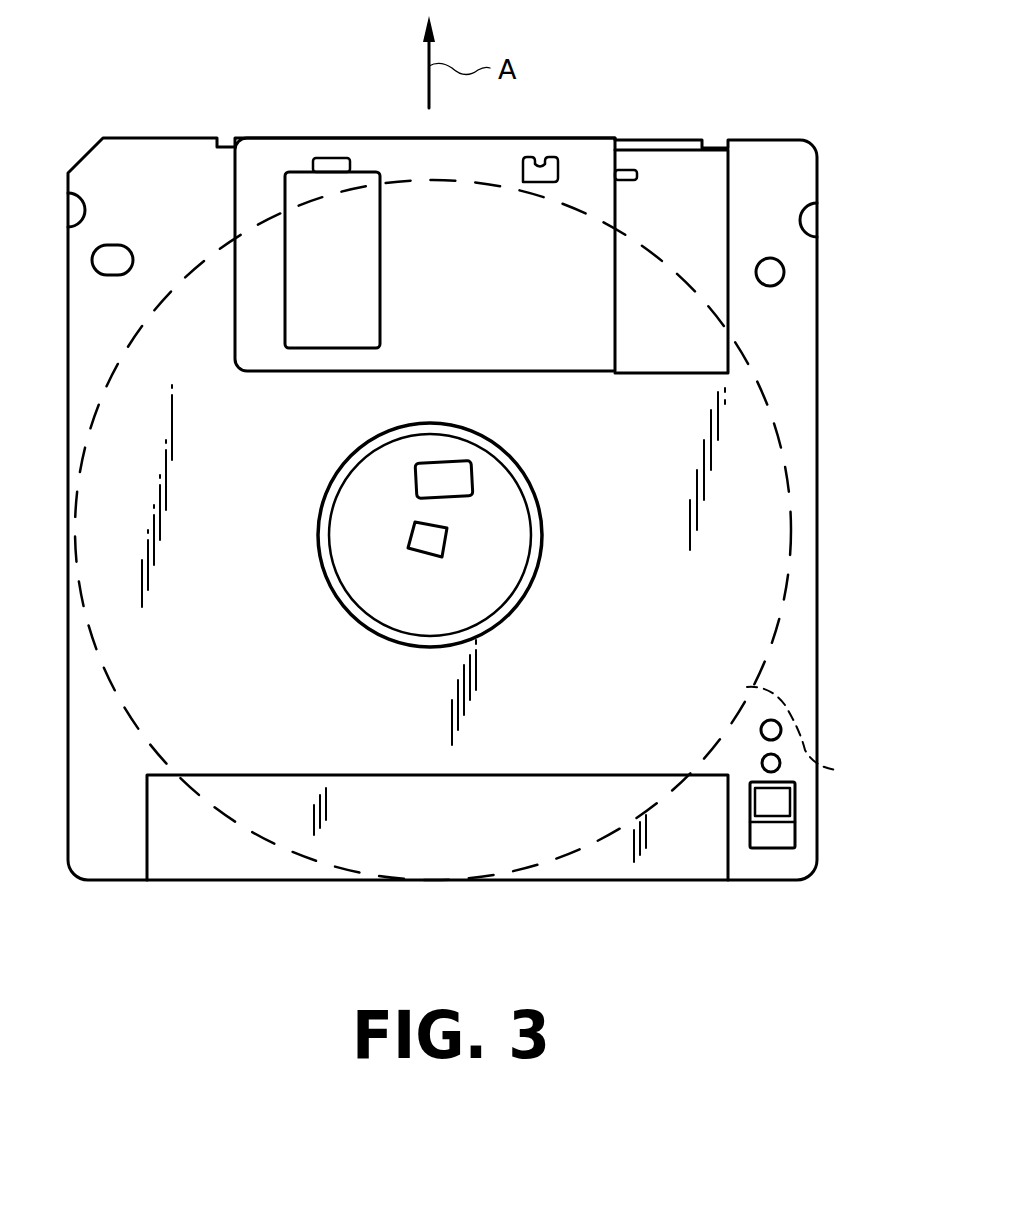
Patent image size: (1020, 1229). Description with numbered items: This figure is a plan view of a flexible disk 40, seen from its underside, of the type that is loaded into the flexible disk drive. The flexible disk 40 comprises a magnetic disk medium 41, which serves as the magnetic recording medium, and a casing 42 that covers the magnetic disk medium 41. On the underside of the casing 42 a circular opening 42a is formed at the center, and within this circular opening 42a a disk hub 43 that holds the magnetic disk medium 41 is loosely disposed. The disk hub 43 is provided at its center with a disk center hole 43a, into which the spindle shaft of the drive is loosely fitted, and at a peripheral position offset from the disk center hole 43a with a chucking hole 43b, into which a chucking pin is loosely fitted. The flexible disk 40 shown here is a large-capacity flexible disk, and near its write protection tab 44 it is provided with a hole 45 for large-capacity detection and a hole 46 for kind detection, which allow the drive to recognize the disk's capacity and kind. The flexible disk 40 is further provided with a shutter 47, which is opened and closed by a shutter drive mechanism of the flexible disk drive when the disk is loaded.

The flexible disk 40 is at (826, 511).
The magnetic disk medium 41 is at (810, 735).
The casing 42 is at (790, 357).
The circular opening 42a is at (532, 588).
The disk hub 43 is at (507, 528).
The disk center hole 43a is at (428, 537).
The chucking hole 43b is at (453, 470).
The write protection tab 44 is at (773, 802).
The hole for large-capacity detection 45 is at (783, 763).
The hole for kind detection 46 is at (760, 733).
The shutter 47 is at (552, 138).